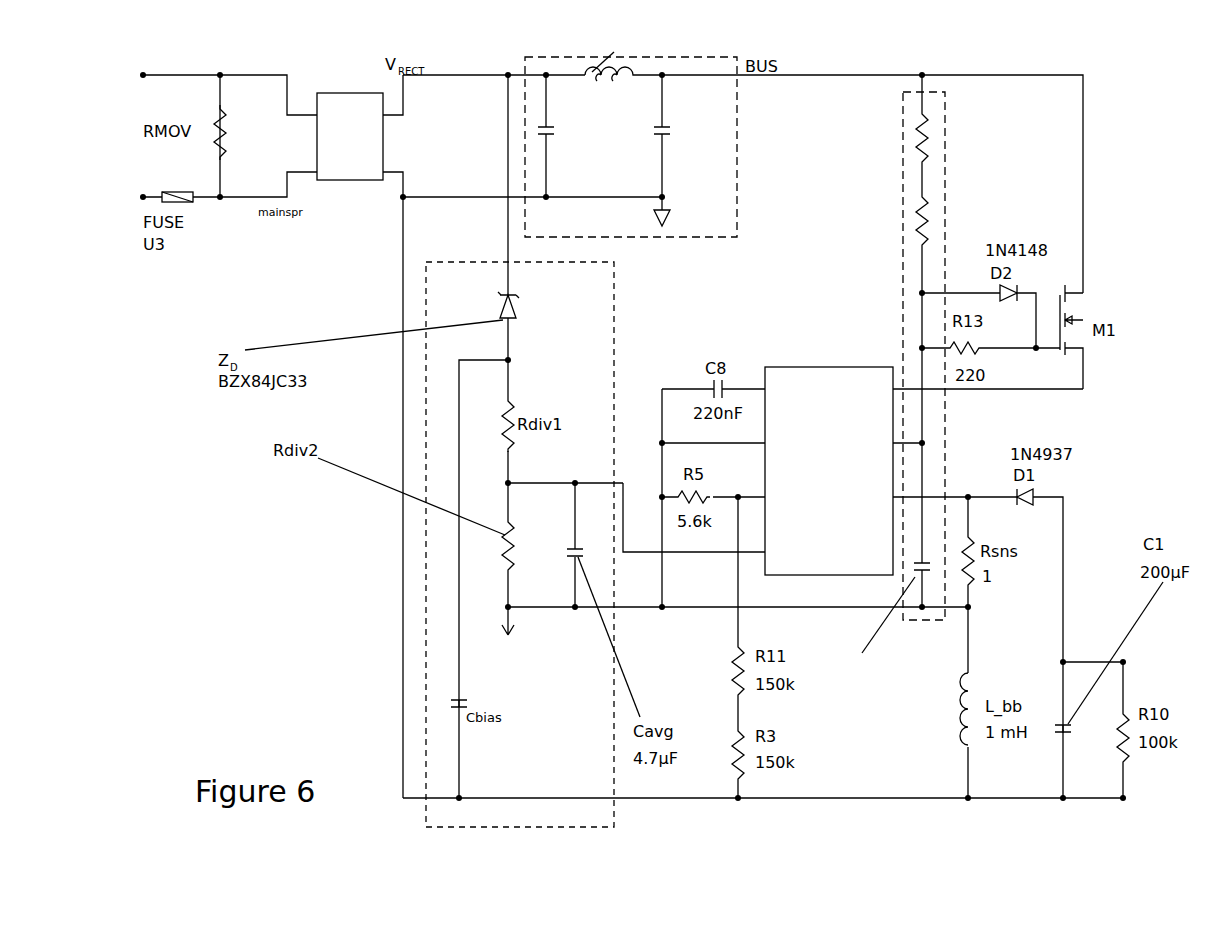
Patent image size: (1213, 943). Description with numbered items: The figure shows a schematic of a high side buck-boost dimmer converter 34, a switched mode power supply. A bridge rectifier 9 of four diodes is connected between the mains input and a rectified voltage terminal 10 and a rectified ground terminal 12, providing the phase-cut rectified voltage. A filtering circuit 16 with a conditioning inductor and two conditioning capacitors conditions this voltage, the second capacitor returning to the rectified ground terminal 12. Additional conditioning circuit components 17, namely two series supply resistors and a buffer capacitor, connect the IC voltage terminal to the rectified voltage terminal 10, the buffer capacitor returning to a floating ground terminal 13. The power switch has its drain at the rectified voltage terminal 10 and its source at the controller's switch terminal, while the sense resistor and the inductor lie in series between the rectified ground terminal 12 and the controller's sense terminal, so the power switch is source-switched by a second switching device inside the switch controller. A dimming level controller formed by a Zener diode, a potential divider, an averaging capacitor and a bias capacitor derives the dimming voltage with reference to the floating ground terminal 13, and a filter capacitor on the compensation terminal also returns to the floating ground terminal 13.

The rectifier 9 is at (373, 93).
The rectified voltage terminal 10 is at (508, 75).
The rectified ground terminal 12 is at (397, 200).
The floating ground terminal 13 is at (510, 635).
The filtering circuit 16 is at (708, 52).
The additional conditioning circuit components 17 is at (946, 92).
The high side buck-boost dimmer converter 34 is at (1139, 83).